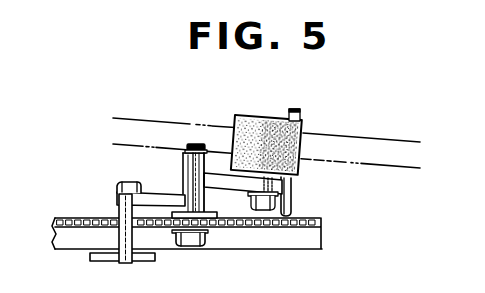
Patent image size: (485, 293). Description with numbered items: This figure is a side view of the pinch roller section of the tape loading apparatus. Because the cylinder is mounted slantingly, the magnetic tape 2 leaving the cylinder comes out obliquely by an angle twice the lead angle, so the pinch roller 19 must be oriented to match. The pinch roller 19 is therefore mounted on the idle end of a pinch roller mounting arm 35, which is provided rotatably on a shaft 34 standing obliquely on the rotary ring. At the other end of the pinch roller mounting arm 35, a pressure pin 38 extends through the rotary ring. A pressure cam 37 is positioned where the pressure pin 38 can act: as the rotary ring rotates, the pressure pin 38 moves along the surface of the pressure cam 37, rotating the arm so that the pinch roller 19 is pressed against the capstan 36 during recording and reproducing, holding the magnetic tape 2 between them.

The magnetic tape 2 is at (369, 132).
The pinch roller 19 is at (257, 116).
The shaft 34 is at (196, 143).
The pinch roller mounting arm 35 is at (184, 167).
The capstan 36 is at (300, 112).
The pressure cam 37 is at (101, 257).
The pressure pin 38 is at (118, 214).